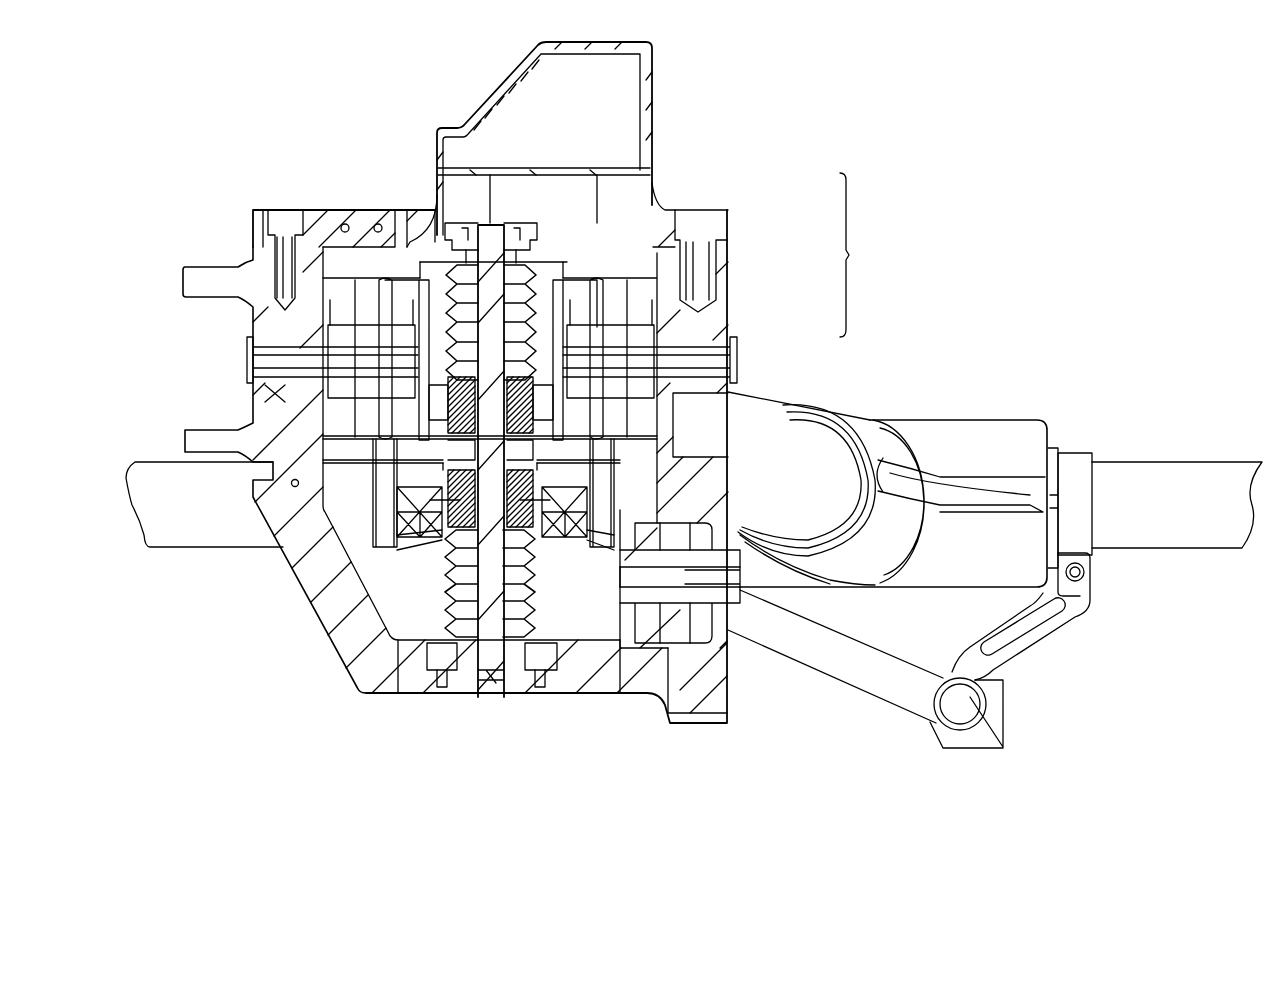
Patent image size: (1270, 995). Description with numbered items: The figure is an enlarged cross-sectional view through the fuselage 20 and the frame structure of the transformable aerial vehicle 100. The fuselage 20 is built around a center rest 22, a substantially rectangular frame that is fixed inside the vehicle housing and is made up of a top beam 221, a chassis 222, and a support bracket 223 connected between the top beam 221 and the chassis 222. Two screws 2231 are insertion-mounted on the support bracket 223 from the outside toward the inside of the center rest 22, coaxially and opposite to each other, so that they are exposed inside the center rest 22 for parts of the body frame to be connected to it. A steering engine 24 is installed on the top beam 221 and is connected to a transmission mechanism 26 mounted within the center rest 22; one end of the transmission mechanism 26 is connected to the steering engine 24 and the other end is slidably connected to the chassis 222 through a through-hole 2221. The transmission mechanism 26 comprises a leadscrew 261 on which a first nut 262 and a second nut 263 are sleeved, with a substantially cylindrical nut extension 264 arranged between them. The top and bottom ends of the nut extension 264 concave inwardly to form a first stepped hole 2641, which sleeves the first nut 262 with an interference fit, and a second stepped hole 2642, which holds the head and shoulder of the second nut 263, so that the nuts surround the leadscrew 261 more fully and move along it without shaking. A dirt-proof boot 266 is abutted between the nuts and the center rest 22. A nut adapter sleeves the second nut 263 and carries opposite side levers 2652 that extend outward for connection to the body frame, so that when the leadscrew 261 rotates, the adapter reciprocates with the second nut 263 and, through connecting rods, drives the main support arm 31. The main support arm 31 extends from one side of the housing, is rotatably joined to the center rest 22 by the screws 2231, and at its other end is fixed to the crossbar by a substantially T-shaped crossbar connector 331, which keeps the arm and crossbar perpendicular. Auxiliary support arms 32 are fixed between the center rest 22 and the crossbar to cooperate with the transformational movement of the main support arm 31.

The transformable aerial vehicle 100 is at (920, 94).
The fuselage 20 is at (262, 190).
The center rest 22 is at (243, 413).
The top beam 221 is at (358, 215).
The chassis 222 is at (418, 677).
The through-hole 2221 is at (502, 678).
The support bracket 223 is at (250, 378).
The screws 2231 is at (323, 335).
The steering engine 24 is at (620, 92).
The transmission mechanism 26 is at (652, 473).
The leadscrew 261 is at (495, 265).
The first nut 262 is at (548, 395).
The second nut 263 is at (600, 395).
The nut extension 264 is at (560, 415).
The first stepped hole 2641 is at (425, 433).
The second stepped hole 2642 is at (376, 545).
The side levers 2652 is at (557, 500).
The dirt-proof boot 266 is at (540, 285).
The main support arm 31 is at (825, 450).
The auxiliary support arms 32 is at (792, 643).
The crossbar connector 331 is at (893, 448).